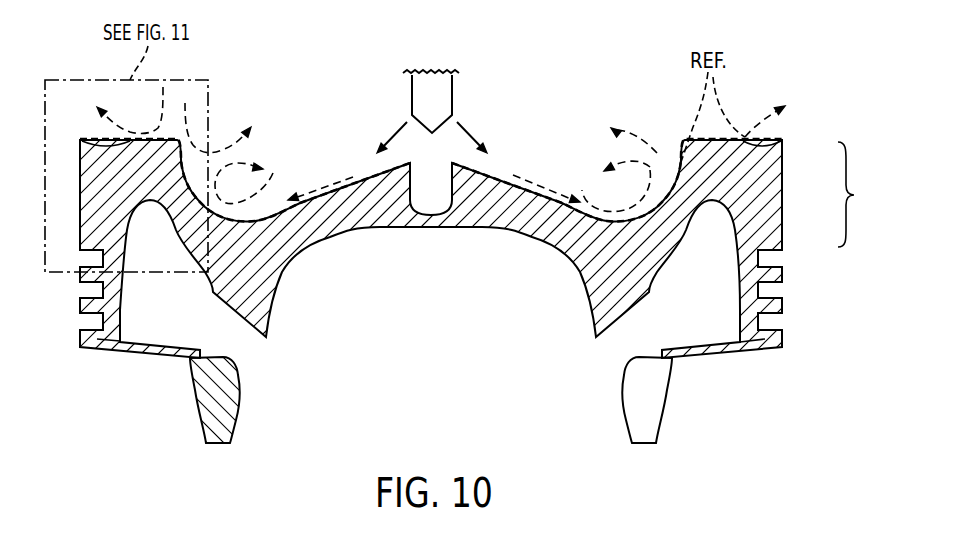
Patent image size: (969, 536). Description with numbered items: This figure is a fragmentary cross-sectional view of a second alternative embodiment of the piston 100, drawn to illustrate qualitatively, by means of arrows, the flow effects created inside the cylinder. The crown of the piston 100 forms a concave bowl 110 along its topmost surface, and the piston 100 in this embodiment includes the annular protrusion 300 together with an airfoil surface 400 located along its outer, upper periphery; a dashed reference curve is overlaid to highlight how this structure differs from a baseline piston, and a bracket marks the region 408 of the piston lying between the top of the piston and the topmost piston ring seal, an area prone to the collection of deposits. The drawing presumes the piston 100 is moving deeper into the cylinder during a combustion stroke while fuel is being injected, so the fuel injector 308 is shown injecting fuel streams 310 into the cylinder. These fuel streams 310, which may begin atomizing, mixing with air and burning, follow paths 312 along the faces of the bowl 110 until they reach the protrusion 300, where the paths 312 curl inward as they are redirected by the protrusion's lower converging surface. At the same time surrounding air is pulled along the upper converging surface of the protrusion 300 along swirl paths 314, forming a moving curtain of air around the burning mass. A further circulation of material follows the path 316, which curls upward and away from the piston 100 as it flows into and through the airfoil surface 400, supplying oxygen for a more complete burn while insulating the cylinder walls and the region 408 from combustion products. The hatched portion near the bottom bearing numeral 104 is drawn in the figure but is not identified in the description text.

The piston 100 is at (800, 67).
The piston pin boss 104 is at (655, 430).
The bowl 110 is at (538, 94).
The annular protrusion 300 is at (680, 177).
The fuel injector 308 is at (443, 95).
The fuel streams 310 is at (402, 124).
The paths 312 is at (273, 175).
The swirl paths 314 is at (218, 150).
The path 316 is at (127, 129).
The airfoil surface 400 is at (743, 137).
The region 408 is at (859, 194).